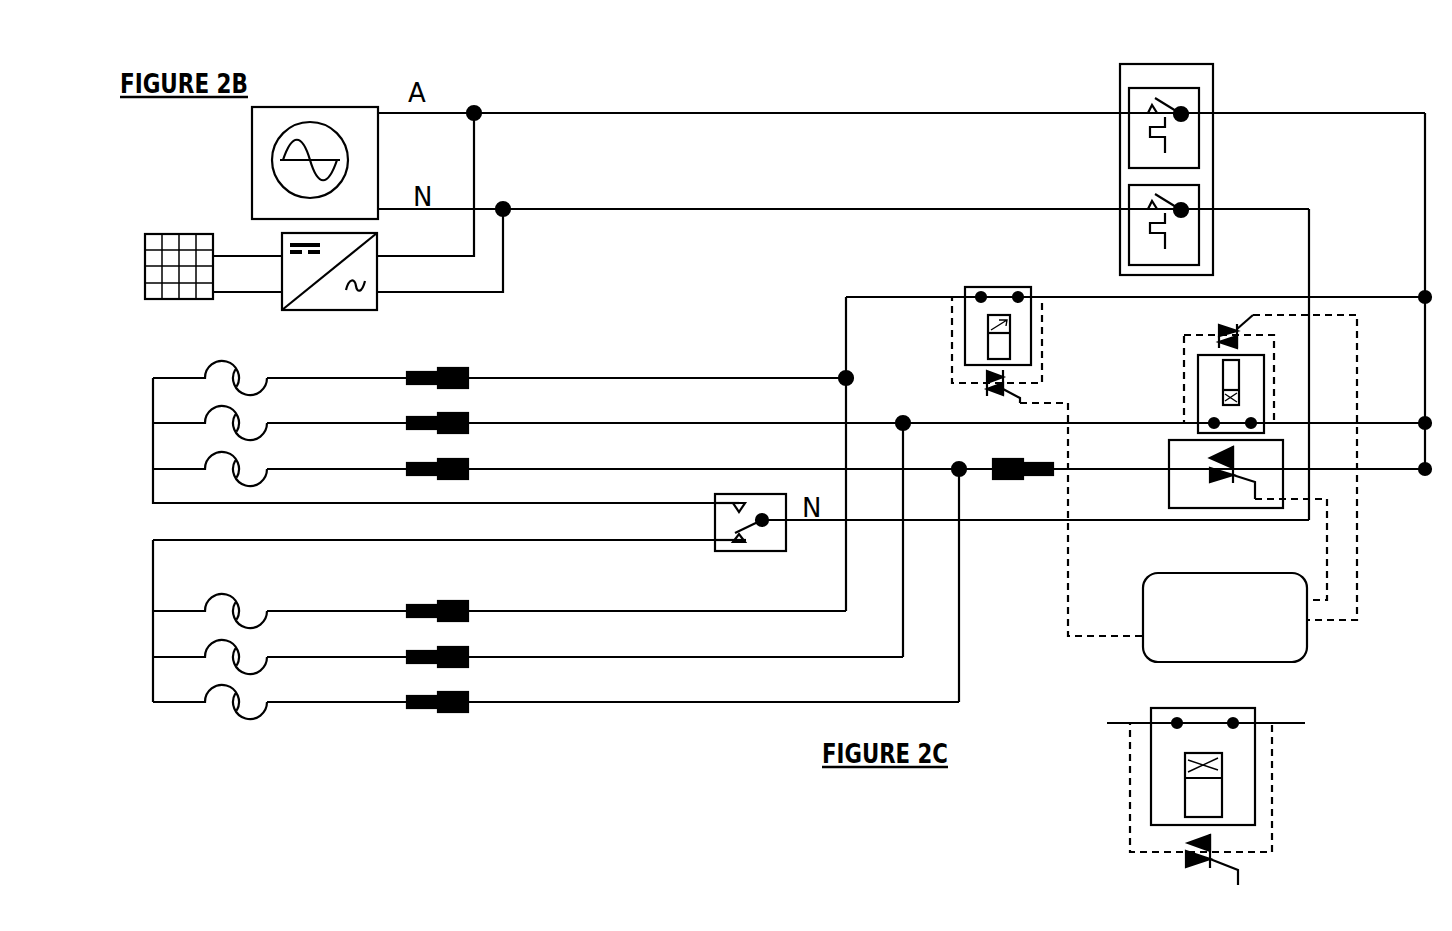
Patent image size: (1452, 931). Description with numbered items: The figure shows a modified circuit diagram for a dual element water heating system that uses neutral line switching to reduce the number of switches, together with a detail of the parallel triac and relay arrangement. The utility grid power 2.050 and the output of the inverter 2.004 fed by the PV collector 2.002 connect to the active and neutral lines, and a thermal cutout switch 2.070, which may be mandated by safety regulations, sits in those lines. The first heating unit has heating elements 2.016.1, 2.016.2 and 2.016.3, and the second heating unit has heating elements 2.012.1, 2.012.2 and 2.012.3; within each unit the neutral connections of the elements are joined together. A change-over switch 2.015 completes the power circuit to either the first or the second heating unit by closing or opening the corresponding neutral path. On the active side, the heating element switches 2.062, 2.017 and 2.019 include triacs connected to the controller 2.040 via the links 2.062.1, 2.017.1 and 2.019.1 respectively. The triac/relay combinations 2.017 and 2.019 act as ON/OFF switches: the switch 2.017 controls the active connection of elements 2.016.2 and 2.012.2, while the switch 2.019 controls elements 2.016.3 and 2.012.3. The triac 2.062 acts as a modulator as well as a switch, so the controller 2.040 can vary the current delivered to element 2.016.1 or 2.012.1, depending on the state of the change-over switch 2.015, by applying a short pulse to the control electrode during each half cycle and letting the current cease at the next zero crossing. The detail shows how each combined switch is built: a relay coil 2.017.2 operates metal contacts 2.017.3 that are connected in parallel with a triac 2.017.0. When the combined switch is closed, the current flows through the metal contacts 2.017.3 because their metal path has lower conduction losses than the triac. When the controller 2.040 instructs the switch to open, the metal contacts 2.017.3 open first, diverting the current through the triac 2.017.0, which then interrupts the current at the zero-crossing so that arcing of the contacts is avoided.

In FIG. 2B, the utility grid power 2.050 is at (280, 163).
In FIG. 2B, the PV collector 2.002 is at (212, 283).
In FIG. 2B, the inverter 2.004 is at (392, 219).
In FIG. 2B, the thermal cutout switch 2.070 is at (1142, 169).
In FIG. 2B, the heating element switch 2.019 is at (997, 330).
In FIG. 2B, the link 2.019.1 is at (1081, 533).
In FIG. 2B, the heating element switch 2.017 is at (1194, 374).
In FIG. 2B, the link 2.017.1 is at (1327, 484).
In FIG. 2B, the triac 2.062 is at (1191, 474).
In FIG. 2B, the link 2.062.1 is at (1282, 549).
In FIG. 2B, the controller 2.040 is at (1225, 617).
In FIG. 2B, the change-over switch 2.015 is at (750, 543).
In FIG. 2B, the heating element 2.016.3 is at (499, 369).
In FIG. 2B, the heating element 2.016.2 is at (789, 418).
In FIG. 2B, the heating element 2.016.1 is at (789, 476).
In FIG. 2B, the heating element 2.012.3 is at (499, 602).
In FIG. 2B, the heating element 2.012.2 is at (528, 652).
In FIG. 2B, the heating element 2.012.1 is at (556, 709).
In FIG. 2C, the metal contacts 2.017.3 is at (1203, 723).
In FIG. 2C, the relay coil 2.017.2 is at (1185, 778).
In FIG. 2C, the triac 2.017.0 is at (1185, 863).